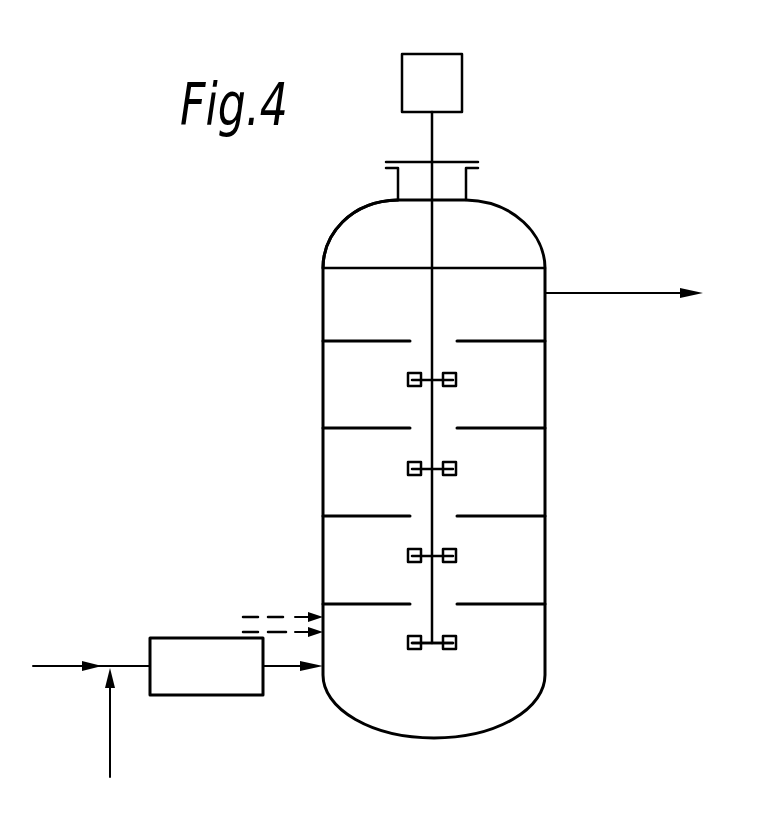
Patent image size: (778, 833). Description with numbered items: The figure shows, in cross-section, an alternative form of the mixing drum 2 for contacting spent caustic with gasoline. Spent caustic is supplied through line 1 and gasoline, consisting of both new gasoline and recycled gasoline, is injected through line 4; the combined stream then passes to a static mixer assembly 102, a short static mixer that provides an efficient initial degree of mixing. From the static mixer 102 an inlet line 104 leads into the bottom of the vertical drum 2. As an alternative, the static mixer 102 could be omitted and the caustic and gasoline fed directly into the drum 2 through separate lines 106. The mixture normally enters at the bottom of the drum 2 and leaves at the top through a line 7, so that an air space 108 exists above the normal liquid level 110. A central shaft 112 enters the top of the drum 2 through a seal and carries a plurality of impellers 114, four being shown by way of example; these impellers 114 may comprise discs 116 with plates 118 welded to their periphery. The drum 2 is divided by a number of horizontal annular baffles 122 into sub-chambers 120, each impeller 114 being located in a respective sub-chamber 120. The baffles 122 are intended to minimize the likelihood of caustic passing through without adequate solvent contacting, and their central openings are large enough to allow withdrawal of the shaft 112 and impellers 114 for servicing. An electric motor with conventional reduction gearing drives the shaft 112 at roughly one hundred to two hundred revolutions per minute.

The line 1 is at (133, 665).
The mixing drum 2 is at (520, 215).
The line 4 is at (110, 735).
The line 7 is at (638, 290).
The static mixer assembly 102 is at (213, 638).
The inlet line 104 is at (283, 668).
The separate lines 106 is at (275, 617).
The air space 108 is at (337, 229).
The normal liquid level 110 is at (333, 270).
The central shaft 112 is at (433, 232).
The impellers 114 is at (417, 368).
The discs 116 is at (436, 649).
The plates 118 is at (405, 650).
The sub-chamber 120 is at (352, 620).
The horizontal annular baffles 122 is at (508, 350).